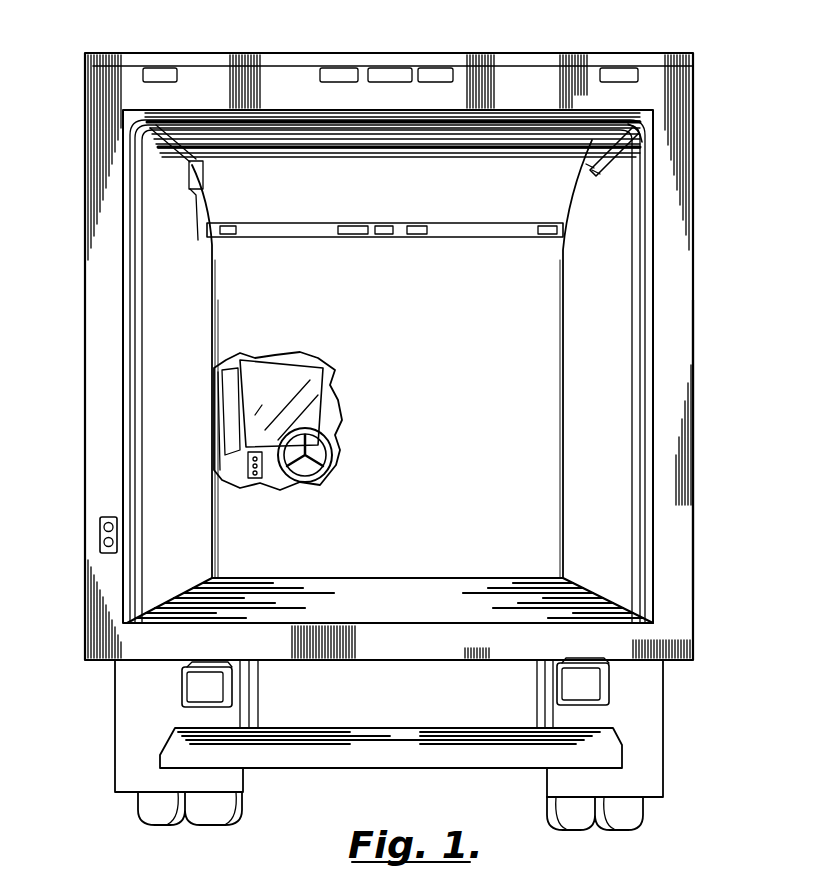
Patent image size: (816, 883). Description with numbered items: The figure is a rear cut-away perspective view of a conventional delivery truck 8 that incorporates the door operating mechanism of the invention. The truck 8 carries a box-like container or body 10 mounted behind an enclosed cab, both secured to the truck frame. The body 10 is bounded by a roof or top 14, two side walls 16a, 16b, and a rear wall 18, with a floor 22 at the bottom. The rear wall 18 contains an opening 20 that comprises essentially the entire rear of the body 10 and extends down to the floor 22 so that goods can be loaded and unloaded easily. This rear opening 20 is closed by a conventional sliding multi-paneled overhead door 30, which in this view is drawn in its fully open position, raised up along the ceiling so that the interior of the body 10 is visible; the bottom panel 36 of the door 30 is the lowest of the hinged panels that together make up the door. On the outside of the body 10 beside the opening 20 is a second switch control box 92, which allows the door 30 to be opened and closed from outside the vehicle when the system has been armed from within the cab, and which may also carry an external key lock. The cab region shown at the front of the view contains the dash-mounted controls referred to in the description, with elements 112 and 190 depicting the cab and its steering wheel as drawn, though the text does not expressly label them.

The delivery truck 8 is at (92, 688).
The body 10 is at (706, 360).
The roof 14 is at (483, 53).
The side wall 16a is at (192, 354).
The side wall 16b is at (620, 362).
The rear wall 18 is at (682, 492).
The opening 20 is at (657, 246).
The floor 22 is at (416, 612).
The sliding multi-paneled door 30 is at (505, 127).
The bottom panel 36 is at (460, 136).
The second switch control box 92 is at (100, 521).
The cab 112 is at (256, 372).
The steering wheel 190 is at (254, 416).